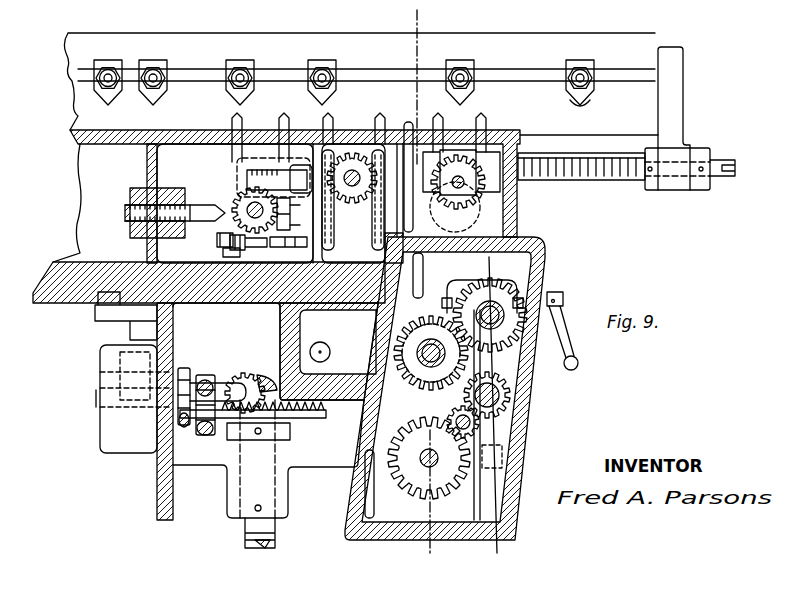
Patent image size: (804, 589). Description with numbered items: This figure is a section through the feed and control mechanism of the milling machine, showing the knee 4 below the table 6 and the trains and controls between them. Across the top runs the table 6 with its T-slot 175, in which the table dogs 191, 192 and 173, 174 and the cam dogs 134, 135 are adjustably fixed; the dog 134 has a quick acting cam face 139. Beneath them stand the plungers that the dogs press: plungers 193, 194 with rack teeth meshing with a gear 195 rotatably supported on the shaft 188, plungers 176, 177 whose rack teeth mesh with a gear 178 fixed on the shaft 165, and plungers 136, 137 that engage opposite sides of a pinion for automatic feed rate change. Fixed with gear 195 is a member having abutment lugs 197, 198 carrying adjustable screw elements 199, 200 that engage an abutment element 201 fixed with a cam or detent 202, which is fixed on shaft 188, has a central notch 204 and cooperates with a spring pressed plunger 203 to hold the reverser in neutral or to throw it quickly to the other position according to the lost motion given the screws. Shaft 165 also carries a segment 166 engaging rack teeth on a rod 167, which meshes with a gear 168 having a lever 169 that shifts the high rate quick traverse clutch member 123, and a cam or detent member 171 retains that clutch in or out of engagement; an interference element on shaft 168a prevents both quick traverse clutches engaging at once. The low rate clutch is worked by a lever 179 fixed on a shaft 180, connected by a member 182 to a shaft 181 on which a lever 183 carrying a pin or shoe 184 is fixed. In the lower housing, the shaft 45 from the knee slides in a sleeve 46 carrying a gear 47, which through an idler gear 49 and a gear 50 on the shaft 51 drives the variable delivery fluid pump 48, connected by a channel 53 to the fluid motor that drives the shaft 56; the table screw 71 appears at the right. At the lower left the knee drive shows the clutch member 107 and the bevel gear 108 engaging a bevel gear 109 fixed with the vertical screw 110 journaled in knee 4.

The knee 4 is at (468, 257).
The table 6 is at (392, 14).
The shaft 45 is at (493, 376).
The hollow shaft or sleeve 46 is at (503, 384).
The gear 47 is at (510, 401).
The fluid pump 48 is at (412, 497).
The idler gear 49 is at (478, 420).
The gear 50 is at (452, 447).
The shaft of pump 51 is at (420, 470).
The connecting channel 53 is at (503, 456).
The shaft 56 is at (462, 412).
The screw 71 is at (589, 180).
The clutch member 107 is at (219, 372).
The bevel gear 108 is at (243, 373).
The bevel gear 109 is at (217, 433).
The vertical screw 110 is at (250, 530).
The clutch member 123 is at (408, 386).
The cam dog 134 is at (595, 70).
The cam dog 135 is at (247, 62).
The plunger 136 is at (485, 121).
The plunger 137 is at (441, 121).
The cam face 139 is at (585, 113).
The shaft 165 is at (350, 190).
The segment 166 is at (386, 129).
The rod 167 is at (417, 173).
The gear 168 is at (374, 343).
The shaft 168a is at (378, 322).
The lever 169 is at (380, 367).
The cam or detent member 171 is at (368, 200).
The table dog 173 is at (178, 58).
The table dog 174 is at (333, 62).
The T-slot 175 is at (191, 69).
The plunger 176 is at (332, 120).
The plunger 177 is at (380, 121).
The gear 178 is at (345, 201).
The lever 179 is at (562, 340).
The shaft 180 is at (555, 304).
The shaft 181 is at (413, 297).
The member 182 is at (520, 272).
The lever 183 is at (405, 297).
The pin or shoe 184 is at (420, 353).
The shaft 188 is at (255, 210).
The table dog 191 is at (108, 58).
The table dog 192 is at (471, 62).
The plunger 193 is at (232, 122).
The plunger 194 is at (279, 120).
The gear 195 is at (306, 208).
The abutment lug 197 is at (225, 254).
The abutment lug 198 is at (293, 252).
The screw element 199 is at (217, 241).
The screw element 200 is at (338, 257).
The abutment element 201 is at (255, 251).
The cam or detent 202 is at (236, 196).
The spring pressed plunger 203 is at (203, 203).
The central notch 204 is at (208, 206).